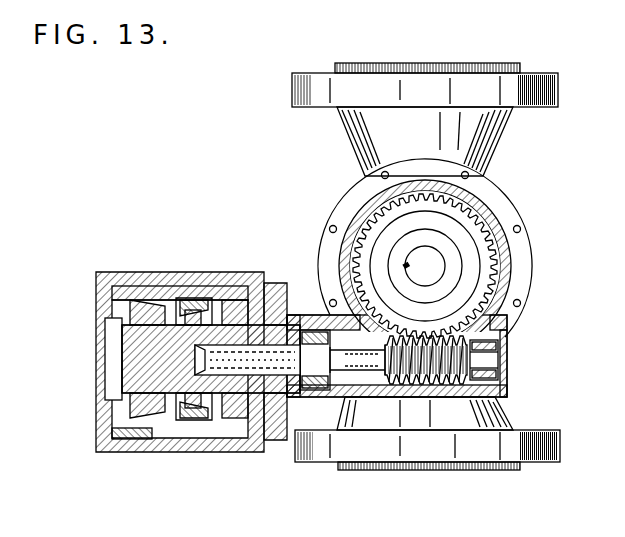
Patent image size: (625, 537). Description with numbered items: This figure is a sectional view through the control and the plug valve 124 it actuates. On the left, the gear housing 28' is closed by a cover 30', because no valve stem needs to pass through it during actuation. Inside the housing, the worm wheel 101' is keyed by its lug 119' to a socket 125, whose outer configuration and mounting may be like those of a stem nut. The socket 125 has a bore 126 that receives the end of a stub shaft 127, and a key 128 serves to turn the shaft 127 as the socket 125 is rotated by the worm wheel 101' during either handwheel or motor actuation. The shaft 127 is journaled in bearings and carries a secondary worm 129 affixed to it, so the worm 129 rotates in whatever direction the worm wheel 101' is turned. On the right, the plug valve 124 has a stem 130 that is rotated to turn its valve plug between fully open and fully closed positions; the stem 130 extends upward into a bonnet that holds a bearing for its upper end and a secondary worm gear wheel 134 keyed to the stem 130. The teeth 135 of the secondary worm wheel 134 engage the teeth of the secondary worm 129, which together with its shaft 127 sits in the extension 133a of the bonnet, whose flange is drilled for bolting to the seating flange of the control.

The plug valve 124 is at (363, 138).
The stub shaft 127 is at (296, 415).
The teeth 135 is at (505, 278).
The secondary worm gear wheel 134 is at (487, 259).
The stem 130 is at (433, 262).
The extension 133a is at (500, 407).
The secondary worm 129 is at (420, 395).
The key 128 is at (278, 345).
The cover 30' is at (156, 362).
The gear housing 28' is at (111, 459).
The socket 125 is at (157, 345).
The bore 126 is at (195, 362).
The lug 119' is at (189, 285).
The worm wheel 101' is at (189, 442).